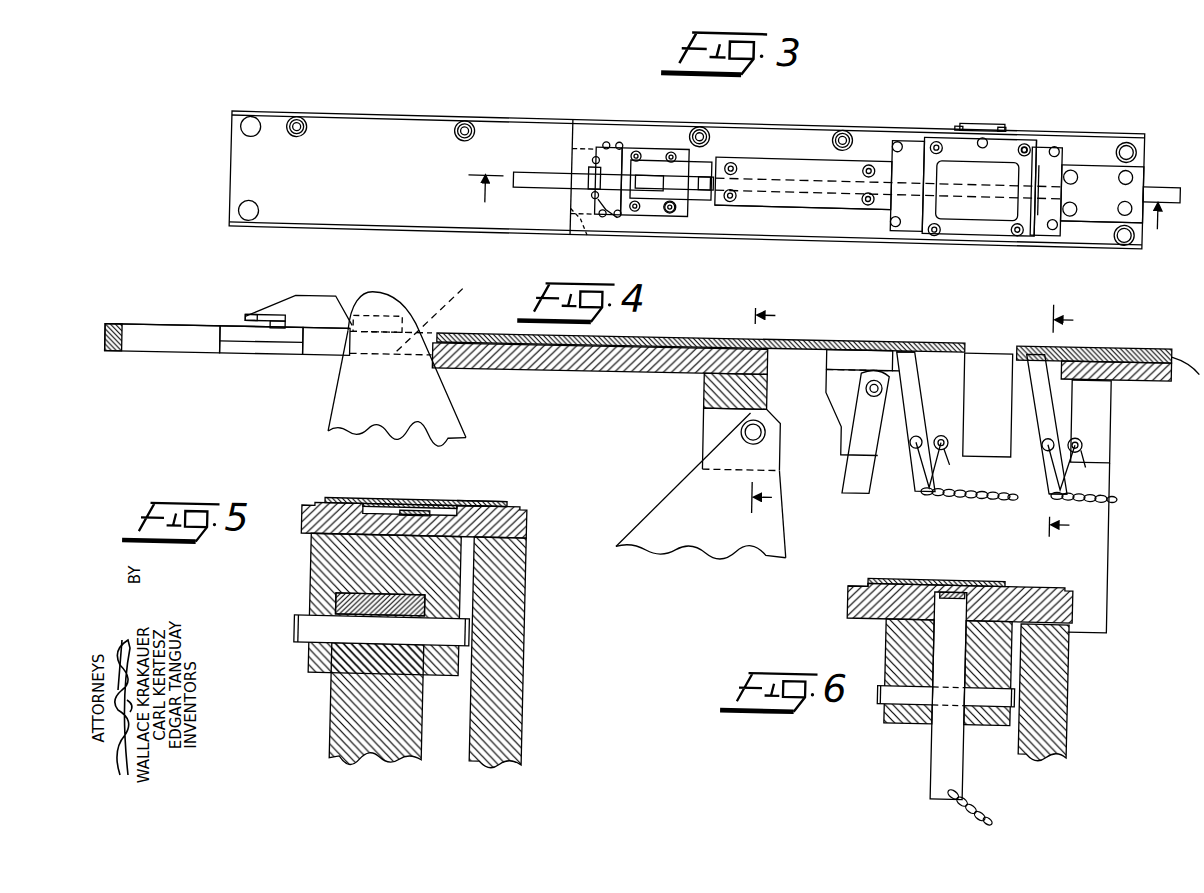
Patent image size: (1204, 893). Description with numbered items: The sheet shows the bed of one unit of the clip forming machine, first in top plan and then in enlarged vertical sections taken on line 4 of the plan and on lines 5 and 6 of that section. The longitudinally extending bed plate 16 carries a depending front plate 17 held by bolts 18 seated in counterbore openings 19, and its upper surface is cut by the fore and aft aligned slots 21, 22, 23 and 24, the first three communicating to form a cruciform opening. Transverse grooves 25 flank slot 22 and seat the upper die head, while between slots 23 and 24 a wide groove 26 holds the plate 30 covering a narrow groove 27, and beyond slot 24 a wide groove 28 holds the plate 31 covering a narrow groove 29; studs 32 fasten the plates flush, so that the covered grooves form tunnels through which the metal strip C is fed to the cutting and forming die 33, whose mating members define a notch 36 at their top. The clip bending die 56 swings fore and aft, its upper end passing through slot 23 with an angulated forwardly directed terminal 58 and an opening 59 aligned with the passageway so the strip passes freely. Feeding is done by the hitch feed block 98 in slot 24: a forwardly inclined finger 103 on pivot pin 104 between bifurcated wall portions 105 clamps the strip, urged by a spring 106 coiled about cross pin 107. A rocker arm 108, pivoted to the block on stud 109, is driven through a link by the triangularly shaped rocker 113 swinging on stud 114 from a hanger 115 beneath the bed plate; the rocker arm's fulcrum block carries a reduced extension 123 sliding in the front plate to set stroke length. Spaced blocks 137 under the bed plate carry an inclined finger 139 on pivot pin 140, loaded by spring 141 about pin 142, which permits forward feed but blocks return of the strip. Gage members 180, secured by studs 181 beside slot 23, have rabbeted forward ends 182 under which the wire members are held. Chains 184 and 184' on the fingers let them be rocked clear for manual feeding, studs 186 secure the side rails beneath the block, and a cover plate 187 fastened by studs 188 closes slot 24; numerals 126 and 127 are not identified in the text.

In FIG. 3, the bed plate 16 is at (393, 133).
In FIG. 4, the bed plate 16 is at (152, 330).
In FIG. 5, the bed plate 16 is at (322, 515).
In FIG. 6, the bed plate 16 is at (860, 600).
In FIG. 4, the front plate 17 is at (1113, 567).
In FIG. 5, the front plate 17 is at (520, 575).
In FIG. 6, the front plate 17 is at (1045, 742).
In FIG. 3, the bolts 18 is at (297, 114).
In FIG. 3, the counterbore openings 19 is at (305, 119).
In FIG. 3, the slot 21 is at (540, 165).
In FIG. 4, the slot 21 is at (178, 357).
In FIG. 3, the slot 22 is at (570, 222).
In FIG. 4, the slot 22 is at (235, 357).
In FIG. 3, the slot 23 is at (645, 150).
In FIG. 4, the slot 23 is at (432, 355).
In FIG. 3, the slot 24 is at (945, 120).
In FIG. 4, the slot 24 is at (997, 370).
In FIG. 4, the transversely extending groove 25 is at (262, 318).
In FIG. 3, the relatively wide groove 26 is at (780, 145).
In FIG. 5, the relatively wide groove 26 is at (333, 497).
In FIG. 3, the relatively narrow groove 27 is at (815, 160).
In FIG. 4, the relatively narrow groove 27 is at (668, 333).
In FIG. 5, the relatively narrow groove 27 is at (405, 500).
In FIG. 3, the relatively wide groove 28 is at (1085, 145).
In FIG. 6, the relatively wide groove 28 is at (900, 585).
In FIG. 3, the relatively narrow groove 29 is at (1120, 152).
In FIG. 4, the relatively narrow groove 29 is at (1125, 340).
In FIG. 6, the relatively narrow groove 29 is at (912, 630).
In FIG. 3, the plate 30 is at (790, 194).
In FIG. 4, the plate 30 is at (708, 343).
In FIG. 5, the plate 30 is at (480, 497).
In FIG. 3, the plate 31 is at (1090, 201).
In FIG. 4, the plate 31 is at (1172, 338).
In FIG. 6, the plate 31 is at (990, 578).
In FIG. 3, the studs 32 is at (870, 190).
In FIG. 3, the cutting and forming die 33 is at (612, 136).
In FIG. 3, the notch 36 is at (598, 148).
In FIG. 4, the clip bending die 56 is at (430, 398).
In FIG. 4, the angulated forwardly directed terminal 58 is at (300, 298).
In FIG. 4, the opening or passageway 59 is at (450, 300).
In FIG. 4, the hitch feed block 98 is at (855, 345).
In FIG. 4, the forwardly inclined finger 103 is at (910, 380).
In FIG. 4, the pivot pin 104 is at (916, 440).
In FIG. 3, the bifurcated wall portions 105 is at (980, 190).
In FIG. 4, the bifurcated wall portions 105 is at (841, 428).
In FIG. 4, the spring 106 is at (940, 445).
In FIG. 4, the cross pin 107 is at (951, 432).
In FIG. 4, the rocker arm 108 is at (860, 475).
In FIG. 4, the stud 109 is at (866, 380).
In FIG. 4, the triangularly shaped rocker 113 is at (690, 545).
In FIG. 5, the triangularly shaped rocker 113 is at (345, 712).
In FIG. 4, the stud 114 is at (743, 430).
In FIG. 5, the stud 114 is at (315, 628).
In FIG. 4, the hanger 115 is at (725, 384).
In FIG. 5, the hanger 115 is at (330, 570).
In FIG. 3, the reduced extension 123 is at (985, 104).
In FIG. 3, the screw 126 is at (1013, 108).
In FIG. 3, the screw 127 is at (962, 108).
In FIG. 4, the spaced blocks 137 is at (1100, 423).
In FIG. 4, the inclined finger 139 is at (1070, 490).
In FIG. 6, the inclined finger 139 is at (940, 766).
In FIG. 4, the pivot pin 140 is at (1046, 445).
In FIG. 6, the pivot pin 140 is at (895, 696).
In FIG. 4, the spring 141 is at (1067, 466).
In FIG. 4, the pin 142 is at (1085, 438).
In FIG. 3, the gage members 180 is at (660, 138).
In FIG. 4, the gage members 180 is at (312, 357).
In FIG. 3, the studs 181 is at (676, 200).
In FIG. 3, the forward ends 182 is at (602, 200).
In FIG. 4, the forward ends 182 is at (252, 318).
In FIG. 4, the chain 184 is at (969, 509).
In FIG. 4, the chain 184' is at (1122, 499).
In FIG. 6, the chain 184' is at (995, 806).
In FIG. 3, the studs 186 is at (935, 126).
In FIG. 3, the cover plate 187 is at (907, 215).
In FIG. 4, the cover plate 187 is at (900, 343).
In FIG. 5, the cover plate 187 is at (458, 500).
In FIG. 3, the studs 188 is at (897, 128).
In FIG. 3, the strip of metal C is at (1042, 145).
In FIG. 4, the strip of metal C is at (600, 345).
In FIG. 5, the strip of metal C is at (425, 508).
In FIG. 6, the strip of metal C is at (955, 590).
In FIG. 3, the section line 4— 4 is at (824, 190).
In FIG. 4, the section line 5— 5 is at (763, 403).
In FIG. 4, the section line 6— 6 is at (1061, 421).